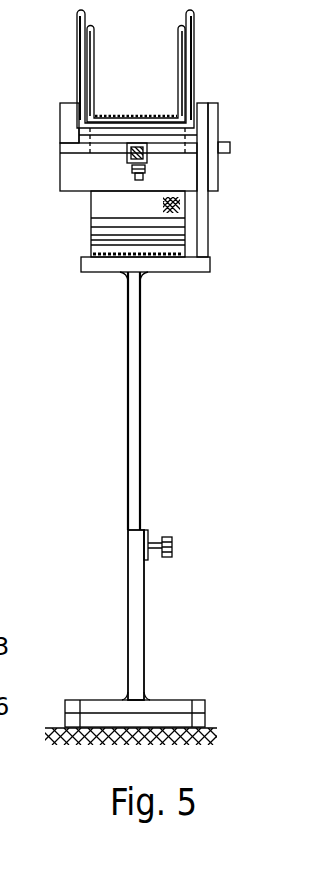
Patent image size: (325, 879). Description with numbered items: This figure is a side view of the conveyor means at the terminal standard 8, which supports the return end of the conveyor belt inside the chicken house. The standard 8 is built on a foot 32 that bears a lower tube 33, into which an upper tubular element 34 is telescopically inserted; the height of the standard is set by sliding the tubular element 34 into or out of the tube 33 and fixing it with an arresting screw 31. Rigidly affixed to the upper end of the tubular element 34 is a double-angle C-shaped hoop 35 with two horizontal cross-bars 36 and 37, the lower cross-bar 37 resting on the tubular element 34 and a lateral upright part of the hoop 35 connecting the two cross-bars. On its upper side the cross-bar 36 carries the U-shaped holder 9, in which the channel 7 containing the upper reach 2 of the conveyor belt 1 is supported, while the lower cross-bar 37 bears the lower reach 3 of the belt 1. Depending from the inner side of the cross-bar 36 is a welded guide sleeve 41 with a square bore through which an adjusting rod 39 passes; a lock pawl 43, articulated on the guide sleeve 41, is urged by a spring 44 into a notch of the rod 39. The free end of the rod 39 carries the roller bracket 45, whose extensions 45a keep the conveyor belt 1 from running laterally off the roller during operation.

The conveyor belt 1 is at (91, 202).
The upper reach 2 is at (152, 114).
The lower reach 3 is at (101, 251).
The channel 7 is at (92, 57).
The terminal standard 8 is at (152, 466).
The U-shaped holder 9 is at (80, 65).
The arresting screw 31 is at (170, 540).
The foot 32 is at (94, 708).
The lower tube 33 is at (135, 640).
The upper tubular element 34 is at (130, 377).
The C-shaped hoop 35 is at (203, 217).
The upper cross-bar 36 is at (82, 138).
The lower cross-bar 37 is at (80, 264).
The adjusting rod 39 is at (133, 143).
The guide sleeve 41 is at (127, 162).
The lock pawl 43 is at (136, 180).
The spring 44 is at (146, 170).
The roller bracket 45 is at (230, 153).
The extensions 45a is at (67, 117).